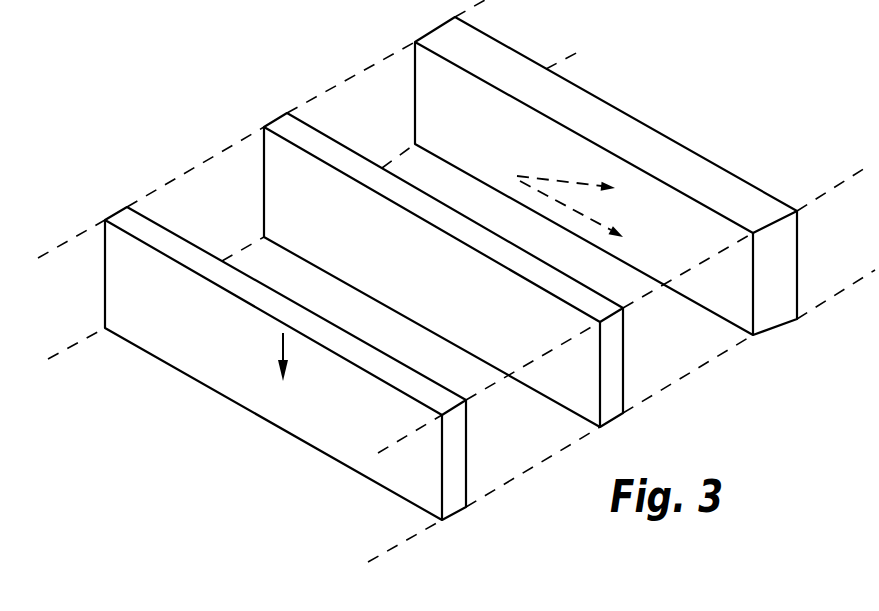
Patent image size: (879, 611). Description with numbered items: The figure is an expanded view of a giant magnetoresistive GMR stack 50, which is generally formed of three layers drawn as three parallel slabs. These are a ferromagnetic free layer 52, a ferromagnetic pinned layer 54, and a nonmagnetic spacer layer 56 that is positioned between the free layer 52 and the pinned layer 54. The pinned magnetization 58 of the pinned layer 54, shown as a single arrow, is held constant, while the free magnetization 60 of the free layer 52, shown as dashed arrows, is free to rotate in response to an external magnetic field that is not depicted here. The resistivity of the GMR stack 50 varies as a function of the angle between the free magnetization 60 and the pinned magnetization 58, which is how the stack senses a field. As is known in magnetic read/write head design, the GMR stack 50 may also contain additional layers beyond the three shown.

The GMR stack 50 is at (456, 281).
The ferromagnetic free layer 52 is at (738, 76).
The ferromagnetic pinned layer 54 is at (428, 485).
The nonmagnetic spacer layer 56 is at (584, 393).
The pinned magnetization 58 is at (294, 370).
The free magnetization 60 is at (586, 217).